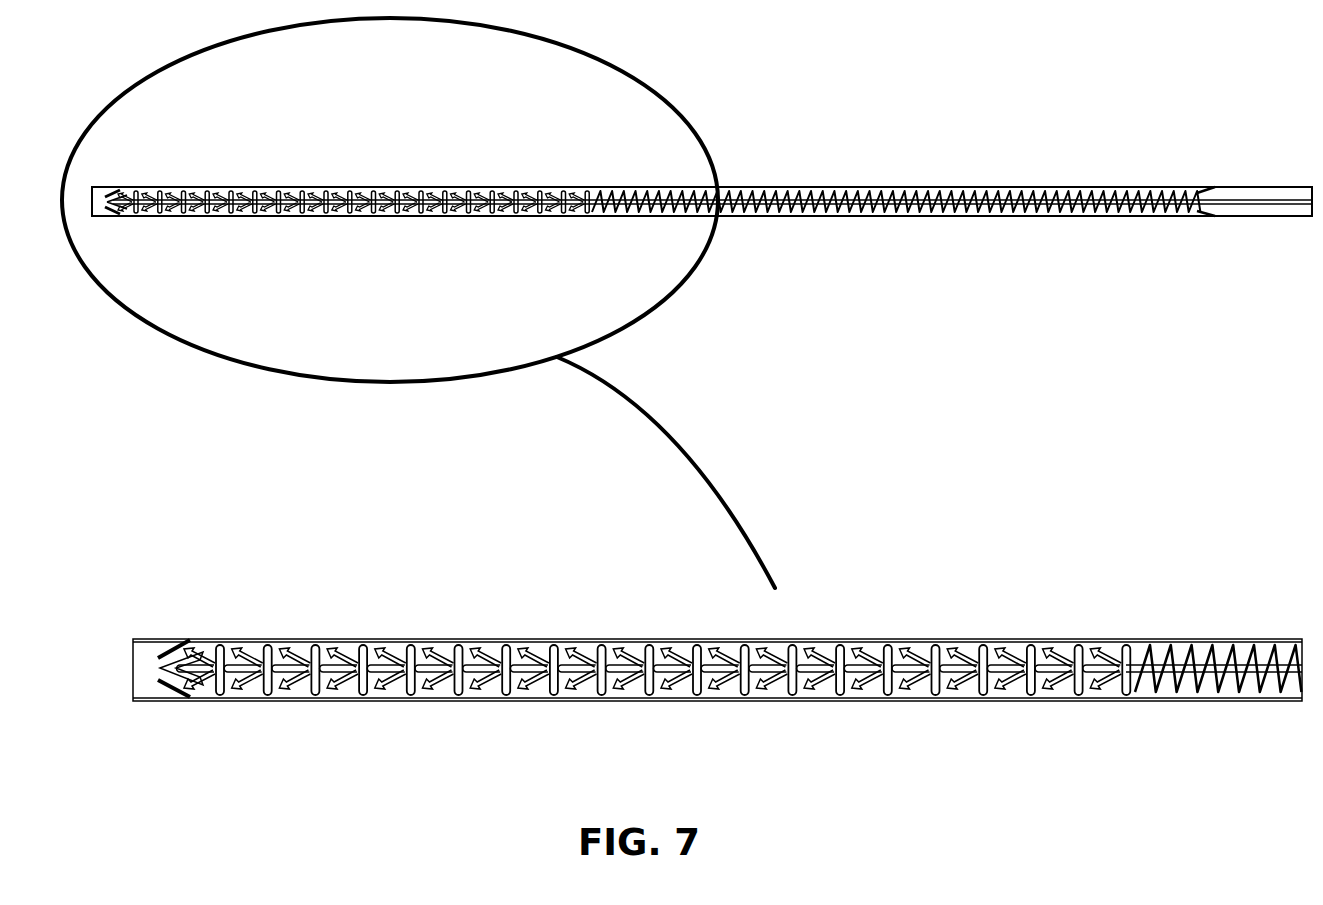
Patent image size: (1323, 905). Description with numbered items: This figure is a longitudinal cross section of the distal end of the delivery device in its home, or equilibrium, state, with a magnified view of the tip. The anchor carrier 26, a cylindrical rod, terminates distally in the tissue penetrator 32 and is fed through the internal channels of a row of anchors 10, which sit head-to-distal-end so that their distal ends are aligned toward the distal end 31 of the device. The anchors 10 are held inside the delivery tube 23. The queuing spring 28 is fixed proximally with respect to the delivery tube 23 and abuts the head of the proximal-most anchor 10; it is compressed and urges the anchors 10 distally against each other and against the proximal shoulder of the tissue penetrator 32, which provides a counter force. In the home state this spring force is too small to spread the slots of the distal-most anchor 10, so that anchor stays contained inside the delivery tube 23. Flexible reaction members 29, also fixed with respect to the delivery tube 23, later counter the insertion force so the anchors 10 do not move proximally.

The anchor 10 is at (443, 192).
The delivery tube 23 is at (822, 218).
The anchor carrier 26 is at (1213, 200).
The queuing spring 28 is at (593, 193).
The flexible reaction members 29 is at (110, 192).
The distal end of delivery device 31 is at (130, 650).
The tissue penetrator 32 is at (168, 668).